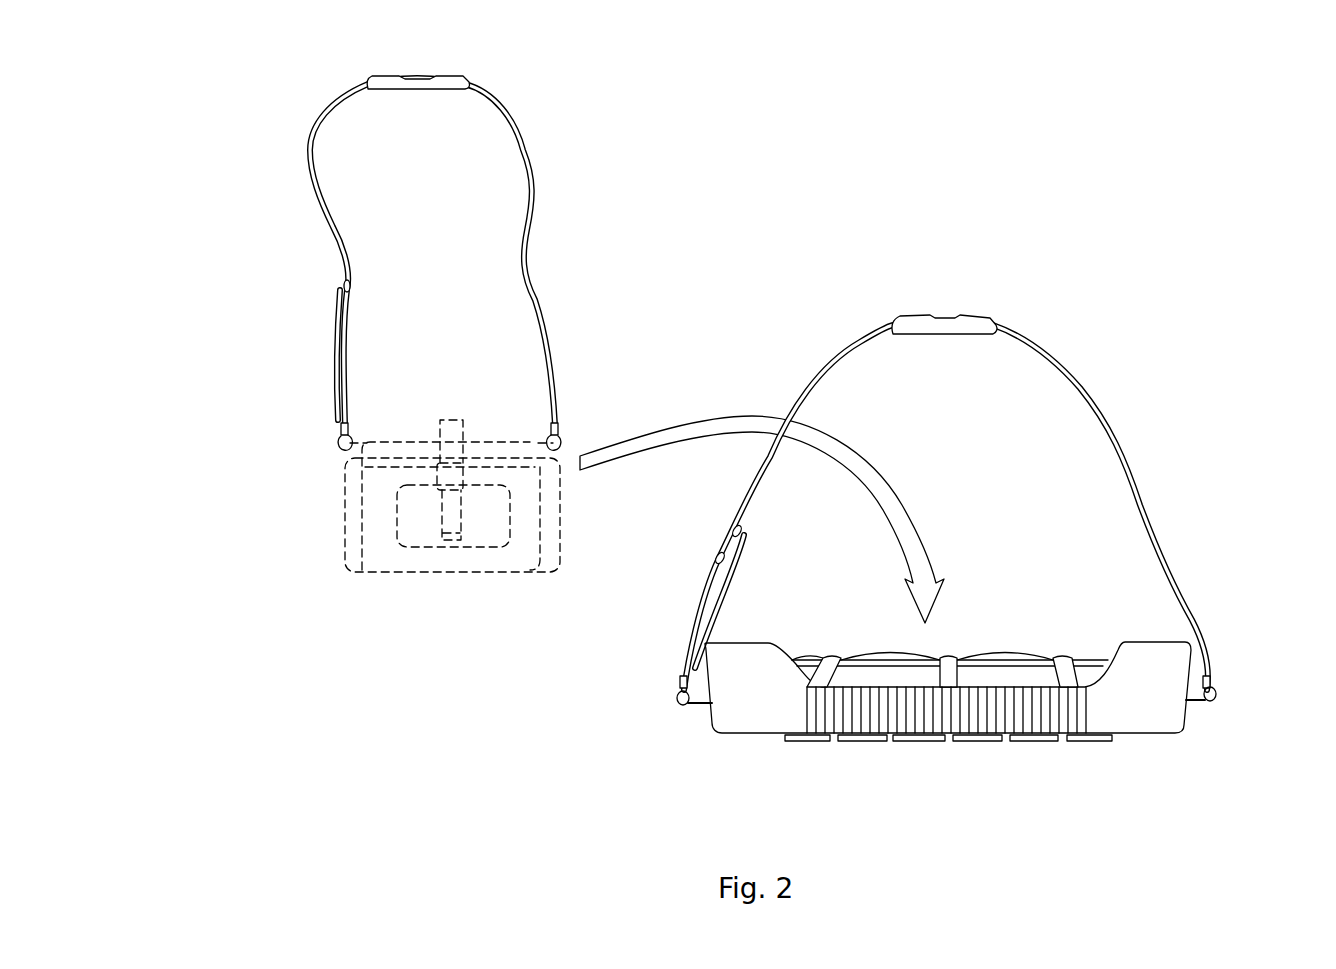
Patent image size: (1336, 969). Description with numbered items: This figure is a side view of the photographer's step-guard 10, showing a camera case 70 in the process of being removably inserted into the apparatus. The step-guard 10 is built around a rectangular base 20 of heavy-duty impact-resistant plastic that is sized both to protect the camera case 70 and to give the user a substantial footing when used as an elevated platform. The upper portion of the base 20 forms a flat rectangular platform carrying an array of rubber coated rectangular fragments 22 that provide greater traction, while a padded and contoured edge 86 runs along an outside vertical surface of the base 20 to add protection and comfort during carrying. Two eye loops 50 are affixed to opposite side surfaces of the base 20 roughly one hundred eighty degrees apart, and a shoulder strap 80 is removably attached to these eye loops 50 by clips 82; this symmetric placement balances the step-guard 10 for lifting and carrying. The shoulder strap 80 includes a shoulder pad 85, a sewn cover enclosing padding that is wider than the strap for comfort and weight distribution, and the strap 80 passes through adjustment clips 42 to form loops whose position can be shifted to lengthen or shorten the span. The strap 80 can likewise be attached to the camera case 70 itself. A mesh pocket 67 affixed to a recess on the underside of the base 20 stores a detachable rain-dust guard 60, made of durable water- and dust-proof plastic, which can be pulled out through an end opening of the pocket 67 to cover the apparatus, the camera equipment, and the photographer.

The photographer's step-guard 10 is at (1121, 216).
The base 20 is at (1137, 698).
The rubber coated rectangular fragments 22 is at (982, 740).
The adjustment clips 42 is at (343, 294).
The eye loops 50 is at (700, 703).
The rain-dust guard 60 is at (1028, 677).
The mesh pocket 67 is at (1063, 660).
The camera case 70 is at (343, 500).
The shoulder strap 80 is at (330, 224).
The clips 82 is at (343, 425).
The shoulder pad 85 is at (386, 82).
The padded and contoured edge 86 is at (987, 707).